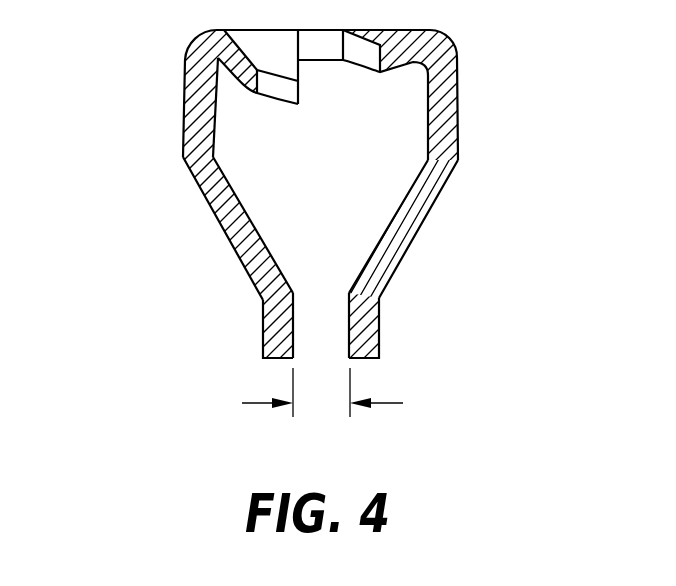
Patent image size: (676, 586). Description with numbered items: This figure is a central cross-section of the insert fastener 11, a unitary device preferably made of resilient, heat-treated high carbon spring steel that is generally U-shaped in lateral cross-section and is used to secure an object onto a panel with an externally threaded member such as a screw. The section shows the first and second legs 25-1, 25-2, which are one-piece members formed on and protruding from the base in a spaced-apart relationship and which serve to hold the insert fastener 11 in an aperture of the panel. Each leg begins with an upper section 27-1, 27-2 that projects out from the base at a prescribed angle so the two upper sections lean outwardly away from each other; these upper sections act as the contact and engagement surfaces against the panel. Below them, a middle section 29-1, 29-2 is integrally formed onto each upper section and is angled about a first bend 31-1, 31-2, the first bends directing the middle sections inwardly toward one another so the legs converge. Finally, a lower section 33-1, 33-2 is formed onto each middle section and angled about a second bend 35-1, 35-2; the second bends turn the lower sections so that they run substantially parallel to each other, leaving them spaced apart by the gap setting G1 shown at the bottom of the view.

The insert fastener 11 is at (142, 277).
The first leg 25-1 is at (161, 148).
The second leg 25-2 is at (472, 157).
The upper section 27-1 is at (185, 73).
The upper section 27-2 is at (458, 78).
The middle section 29-1 is at (213, 217).
The middle section 29-2 is at (420, 230).
The first bend 31-1 is at (215, 150).
The first bend 31-2 is at (423, 148).
The lower section 33-1 is at (263, 335).
The lower section 33-2 is at (380, 328).
The second bend 35-1 is at (294, 293).
The second bend 35-2 is at (348, 293).
The gap setting G1 is at (322, 396).